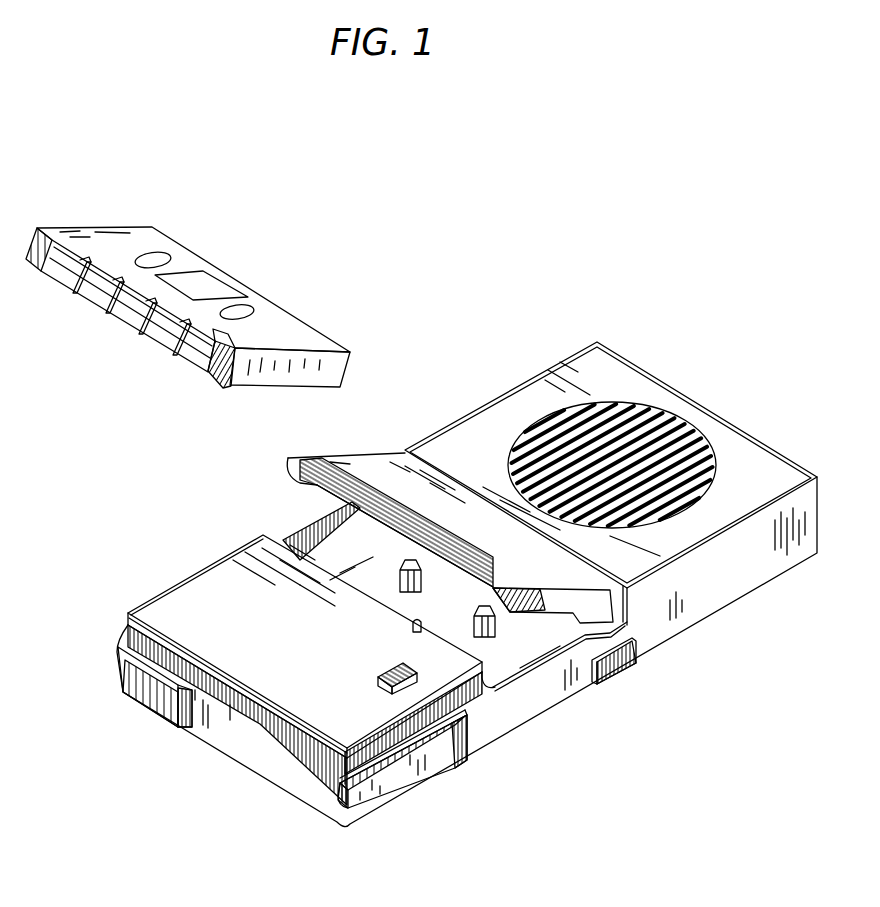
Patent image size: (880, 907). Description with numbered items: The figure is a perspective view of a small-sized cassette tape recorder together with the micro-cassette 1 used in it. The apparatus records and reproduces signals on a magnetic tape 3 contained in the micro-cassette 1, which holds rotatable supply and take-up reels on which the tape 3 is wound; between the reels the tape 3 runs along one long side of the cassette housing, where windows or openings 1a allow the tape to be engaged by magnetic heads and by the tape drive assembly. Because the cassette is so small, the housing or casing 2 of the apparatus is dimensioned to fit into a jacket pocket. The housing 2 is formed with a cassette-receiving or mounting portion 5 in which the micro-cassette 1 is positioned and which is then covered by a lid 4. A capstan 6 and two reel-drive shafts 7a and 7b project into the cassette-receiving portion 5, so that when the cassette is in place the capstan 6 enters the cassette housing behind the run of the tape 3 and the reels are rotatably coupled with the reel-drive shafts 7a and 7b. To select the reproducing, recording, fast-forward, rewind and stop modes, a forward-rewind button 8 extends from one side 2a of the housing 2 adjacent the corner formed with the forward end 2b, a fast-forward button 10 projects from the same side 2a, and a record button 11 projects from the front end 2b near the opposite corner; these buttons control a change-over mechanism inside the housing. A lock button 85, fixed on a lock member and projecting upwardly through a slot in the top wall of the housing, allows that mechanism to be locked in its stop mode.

The micro-cassette 1 is at (230, 255).
The windows or openings 1a is at (162, 346).
The magnetic tape 3 is at (96, 286).
The housing or casing 2 is at (208, 604).
The side of housing 2a is at (577, 680).
The forward end of housing 2b is at (252, 752).
The lid 4 is at (366, 444).
The cassette-receiving or mounting portion 5 is at (506, 660).
The capstan 6 is at (412, 624).
The reel-drive shaft 7a is at (398, 582).
The reel-drive shaft 7b is at (478, 623).
The forward-rewind button 8 is at (397, 792).
The fast-forward button 10 is at (620, 668).
The record button 11 is at (152, 698).
The lock button 85 is at (378, 672).